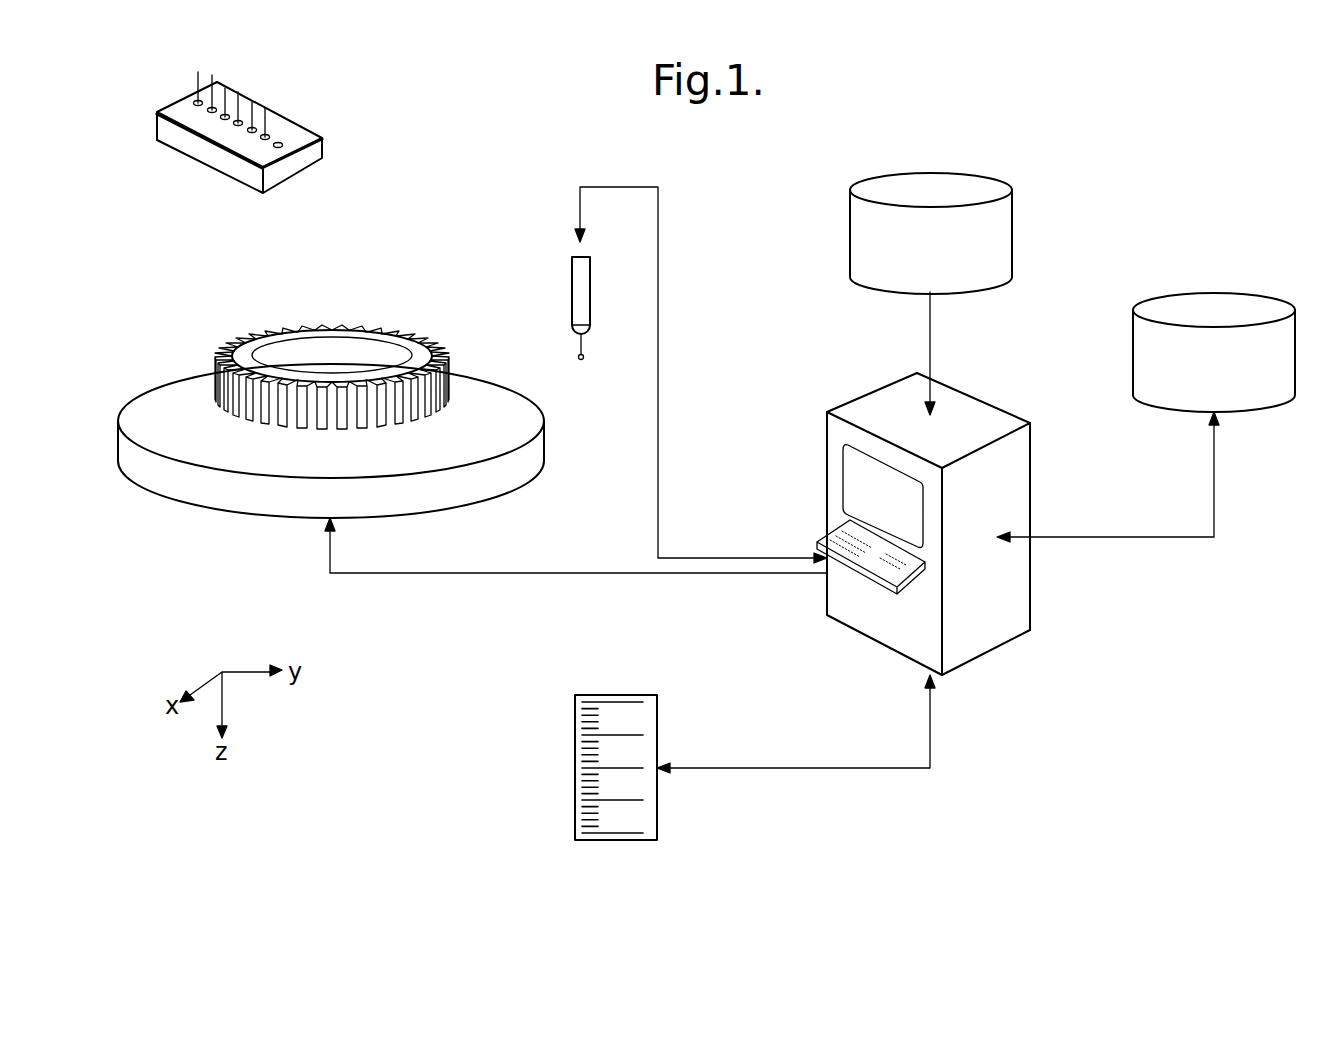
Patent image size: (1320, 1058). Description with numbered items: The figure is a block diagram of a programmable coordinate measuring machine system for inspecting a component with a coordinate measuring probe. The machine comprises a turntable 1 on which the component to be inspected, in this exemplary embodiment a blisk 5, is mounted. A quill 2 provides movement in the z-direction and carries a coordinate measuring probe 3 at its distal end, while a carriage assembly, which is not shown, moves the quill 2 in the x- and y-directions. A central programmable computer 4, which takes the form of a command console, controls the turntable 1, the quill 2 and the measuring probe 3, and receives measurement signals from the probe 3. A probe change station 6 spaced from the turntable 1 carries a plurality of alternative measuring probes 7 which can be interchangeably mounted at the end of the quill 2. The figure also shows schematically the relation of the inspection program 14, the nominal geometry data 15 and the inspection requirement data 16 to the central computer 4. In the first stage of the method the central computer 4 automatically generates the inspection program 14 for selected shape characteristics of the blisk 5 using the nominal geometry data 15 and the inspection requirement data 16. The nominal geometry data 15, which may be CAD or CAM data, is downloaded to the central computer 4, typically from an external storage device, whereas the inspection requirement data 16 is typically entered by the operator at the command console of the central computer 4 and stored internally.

The turntable 1 is at (195, 490).
The quill 2 is at (572, 306).
The coordinate measuring probe 3 is at (583, 344).
The central programmable computer 4 is at (863, 402).
The blisk 5 is at (311, 332).
The probe change station 6 is at (300, 163).
The alternative measuring probes 7 is at (265, 108).
The inspection program 14 is at (657, 722).
The nominal geometry data 15 is at (1012, 218).
The inspection requirement data 16 is at (1133, 330).